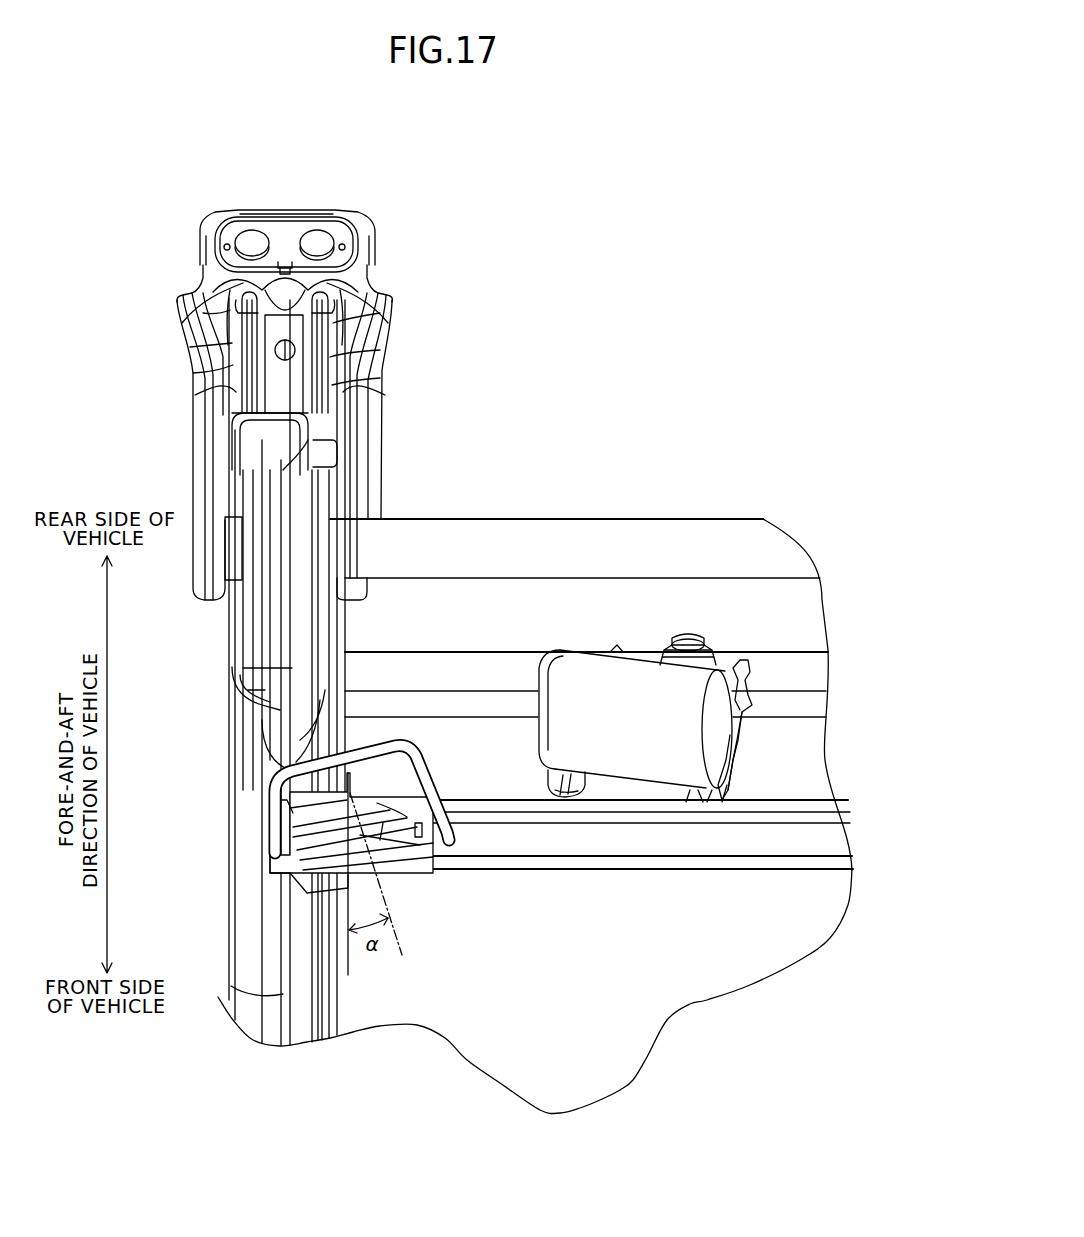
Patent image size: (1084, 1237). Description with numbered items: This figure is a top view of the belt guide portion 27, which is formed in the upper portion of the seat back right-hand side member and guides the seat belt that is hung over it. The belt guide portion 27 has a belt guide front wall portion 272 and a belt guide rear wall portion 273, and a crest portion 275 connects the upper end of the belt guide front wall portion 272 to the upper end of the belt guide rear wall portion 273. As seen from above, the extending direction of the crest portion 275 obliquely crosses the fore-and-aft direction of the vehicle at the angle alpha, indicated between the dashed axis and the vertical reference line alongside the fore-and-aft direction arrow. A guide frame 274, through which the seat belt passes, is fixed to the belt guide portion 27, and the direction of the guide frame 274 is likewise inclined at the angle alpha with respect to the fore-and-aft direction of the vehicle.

The belt guide portion 27 is at (287, 828).
The belt guide front wall portion 272 is at (270, 873).
The belt guide rear wall portion 273 is at (385, 820).
The guide frame 274 is at (435, 770).
The crest portion 275 is at (383, 840).